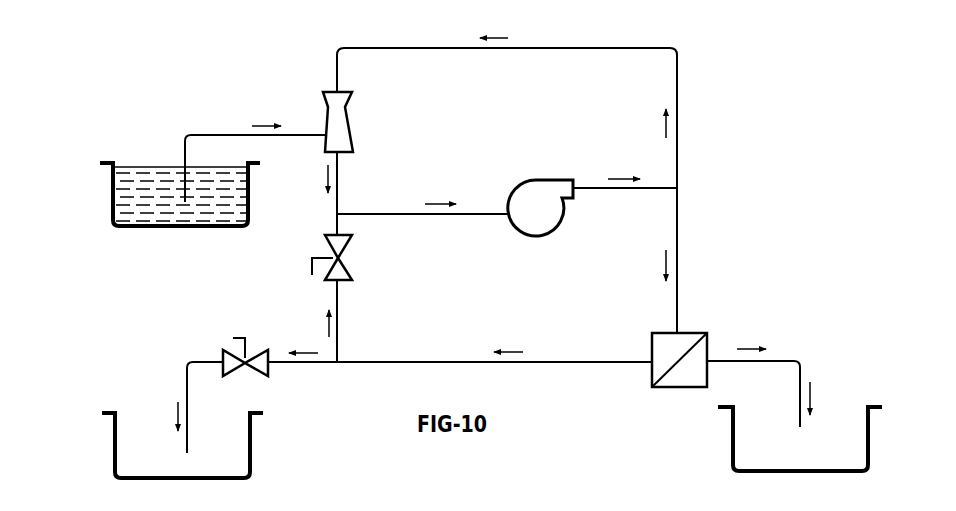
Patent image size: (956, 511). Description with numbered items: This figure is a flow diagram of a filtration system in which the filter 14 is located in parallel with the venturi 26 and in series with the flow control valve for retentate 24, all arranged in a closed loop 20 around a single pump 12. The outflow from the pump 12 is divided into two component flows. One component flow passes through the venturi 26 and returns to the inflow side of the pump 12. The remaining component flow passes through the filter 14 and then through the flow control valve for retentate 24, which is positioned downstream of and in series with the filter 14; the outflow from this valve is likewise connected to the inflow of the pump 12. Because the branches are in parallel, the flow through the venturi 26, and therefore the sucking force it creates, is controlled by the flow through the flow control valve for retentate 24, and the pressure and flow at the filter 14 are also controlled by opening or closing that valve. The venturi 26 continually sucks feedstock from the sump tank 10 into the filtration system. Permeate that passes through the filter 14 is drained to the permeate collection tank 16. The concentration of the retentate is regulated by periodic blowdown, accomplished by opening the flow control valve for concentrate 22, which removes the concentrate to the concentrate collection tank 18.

The sump tank 10 is at (115, 230).
The pump 12 is at (537, 238).
The filter 14 is at (708, 337).
The permeate collection tank 16 is at (732, 433).
The concentrate collection tank 18 is at (112, 447).
The closed loop 20 is at (340, 342).
The flow control valve for concentrate 22 is at (230, 355).
The flow control valve for retentate 24 is at (343, 248).
The venturi 26 is at (325, 105).